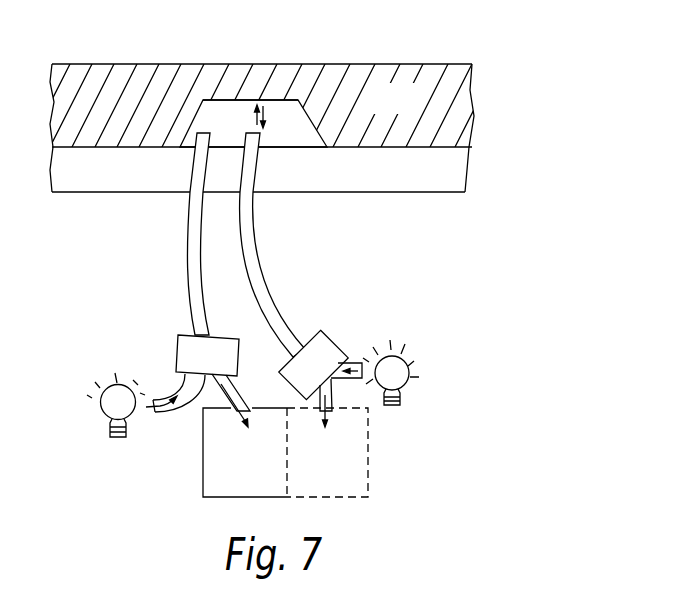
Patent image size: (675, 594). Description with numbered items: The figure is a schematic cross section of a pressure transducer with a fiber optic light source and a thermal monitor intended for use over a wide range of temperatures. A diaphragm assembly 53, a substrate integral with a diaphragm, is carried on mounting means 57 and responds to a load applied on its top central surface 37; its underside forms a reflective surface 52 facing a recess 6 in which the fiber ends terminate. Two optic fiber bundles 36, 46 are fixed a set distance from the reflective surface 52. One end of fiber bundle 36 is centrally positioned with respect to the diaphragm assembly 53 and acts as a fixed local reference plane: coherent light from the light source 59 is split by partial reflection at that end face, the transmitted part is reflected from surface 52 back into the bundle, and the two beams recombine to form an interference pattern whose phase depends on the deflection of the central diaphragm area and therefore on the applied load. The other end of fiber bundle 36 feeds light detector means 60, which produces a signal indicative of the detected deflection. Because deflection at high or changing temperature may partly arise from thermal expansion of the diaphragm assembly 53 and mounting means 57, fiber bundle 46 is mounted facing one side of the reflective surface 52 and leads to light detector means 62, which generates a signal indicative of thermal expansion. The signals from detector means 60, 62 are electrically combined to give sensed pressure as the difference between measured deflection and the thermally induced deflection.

The top central surface 37 is at (258, 64).
The reflective surface 52 is at (236, 108).
The diaphragm assembly 53 is at (405, 110).
The mounting means 57 is at (125, 180).
The recess 6 is at (285, 136).
The fiber optic bundle 46 is at (187, 274).
The fiber optic bundle 36 is at (260, 275).
The light source 59 is at (404, 379).
The light detector means 62 is at (255, 472).
The light detector means 60 is at (337, 472).